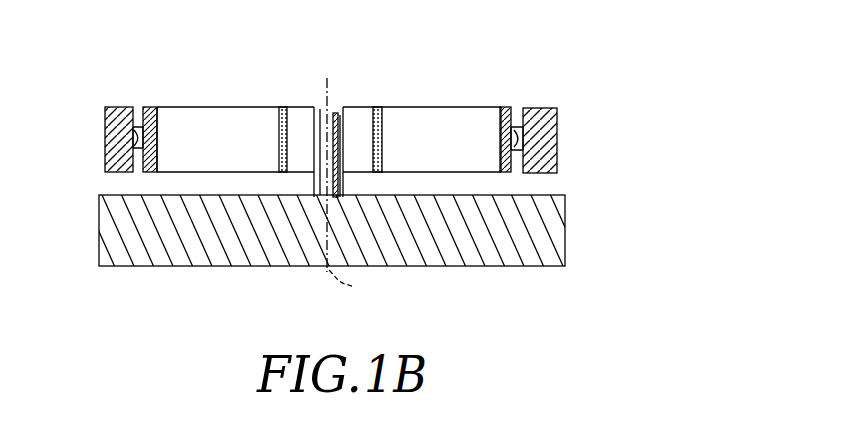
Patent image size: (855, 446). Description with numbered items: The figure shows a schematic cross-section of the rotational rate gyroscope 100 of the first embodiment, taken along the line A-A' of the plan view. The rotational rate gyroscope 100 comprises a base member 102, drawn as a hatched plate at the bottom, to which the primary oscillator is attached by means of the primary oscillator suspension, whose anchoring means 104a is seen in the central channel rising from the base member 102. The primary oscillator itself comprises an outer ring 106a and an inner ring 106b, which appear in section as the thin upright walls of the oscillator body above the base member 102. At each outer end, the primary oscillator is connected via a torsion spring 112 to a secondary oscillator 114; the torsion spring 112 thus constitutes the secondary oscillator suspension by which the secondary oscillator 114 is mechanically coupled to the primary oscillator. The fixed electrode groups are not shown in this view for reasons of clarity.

The rotational rate gyroscope 100 is at (402, 174).
The base member 102 is at (553, 243).
The anchoring means 104a is at (343, 128).
The outer ring 106a is at (152, 107).
The inner ring 106b is at (283, 107).
The torsion spring 112 is at (133, 107).
The secondary oscillator 114 is at (557, 140).